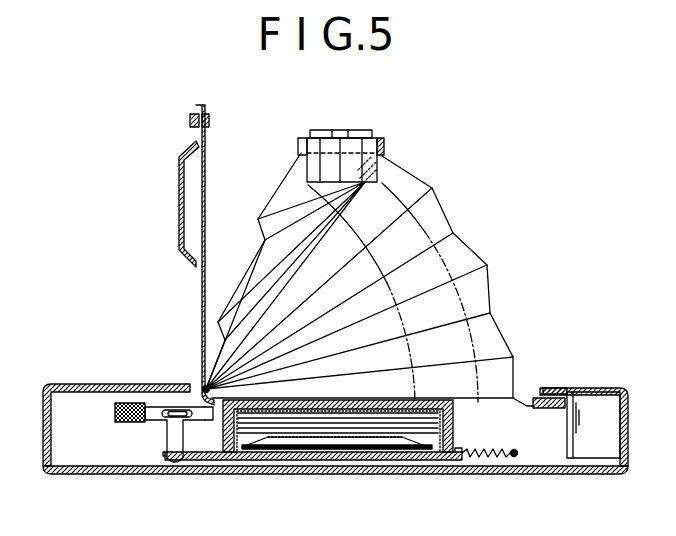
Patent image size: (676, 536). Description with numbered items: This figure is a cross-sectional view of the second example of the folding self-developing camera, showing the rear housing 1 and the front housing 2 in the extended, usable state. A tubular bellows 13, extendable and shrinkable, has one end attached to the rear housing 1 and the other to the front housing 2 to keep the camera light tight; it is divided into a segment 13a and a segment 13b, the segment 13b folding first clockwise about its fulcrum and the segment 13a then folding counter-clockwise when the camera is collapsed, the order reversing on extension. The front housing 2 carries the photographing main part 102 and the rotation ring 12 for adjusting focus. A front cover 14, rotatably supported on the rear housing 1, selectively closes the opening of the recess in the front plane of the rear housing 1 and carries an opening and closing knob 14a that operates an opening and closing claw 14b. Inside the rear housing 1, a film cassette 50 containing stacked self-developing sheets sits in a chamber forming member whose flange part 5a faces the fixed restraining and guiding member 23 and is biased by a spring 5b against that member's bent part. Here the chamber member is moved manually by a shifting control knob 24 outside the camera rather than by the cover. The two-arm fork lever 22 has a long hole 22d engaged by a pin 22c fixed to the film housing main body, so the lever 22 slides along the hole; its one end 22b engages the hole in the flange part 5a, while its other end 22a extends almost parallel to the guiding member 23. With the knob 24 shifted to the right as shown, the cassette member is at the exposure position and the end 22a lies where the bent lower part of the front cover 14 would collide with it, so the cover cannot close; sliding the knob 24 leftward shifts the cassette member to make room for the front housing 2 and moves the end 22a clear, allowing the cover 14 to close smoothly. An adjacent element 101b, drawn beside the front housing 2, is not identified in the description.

The rear housing 1 is at (589, 475).
The front housing 2 is at (592, 398).
The flange part 5a is at (401, 470).
The spring 5b is at (484, 457).
The rotation ring 12 is at (365, 138).
The bellows 13 is at (372, 279).
The bellows segment 13a is at (281, 194).
The bellows segment 13b is at (486, 256).
The front cover 14 is at (191, 255).
The opening and closing knob 14a is at (190, 123).
The opening and closing claw 14b is at (209, 123).
The two-arm fork lever 22 is at (172, 432).
The lever end 22a is at (205, 421).
The lever end 22b is at (176, 461).
The pin 22c is at (162, 411).
The long hole 22d is at (184, 411).
The restraining and guiding member 23 is at (350, 460).
The shifting control knob 24 is at (114, 413).
The film cassette 50 is at (299, 450).
The mounting flange 101b is at (538, 398).
The photographing main part 102 is at (386, 152).